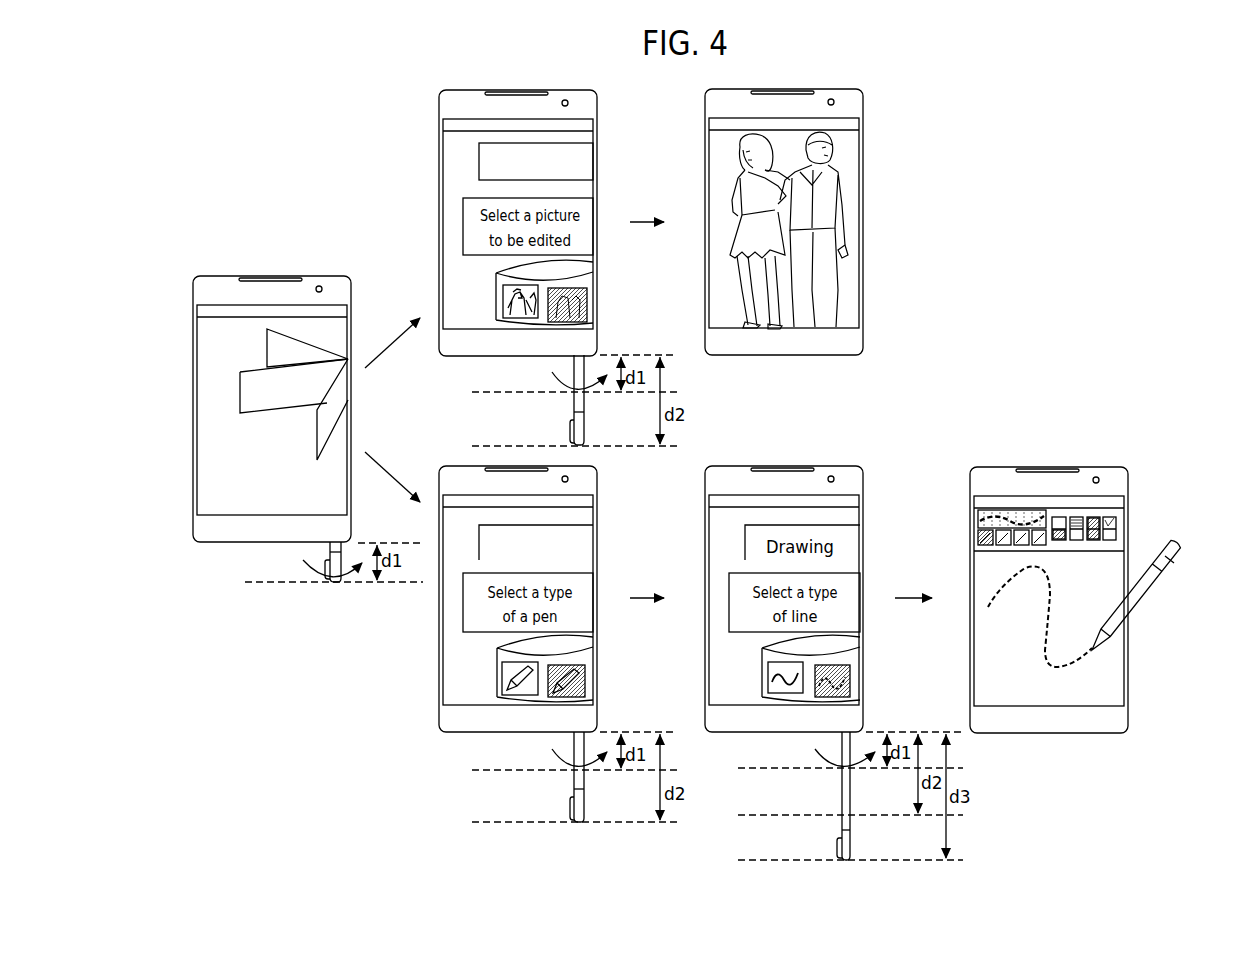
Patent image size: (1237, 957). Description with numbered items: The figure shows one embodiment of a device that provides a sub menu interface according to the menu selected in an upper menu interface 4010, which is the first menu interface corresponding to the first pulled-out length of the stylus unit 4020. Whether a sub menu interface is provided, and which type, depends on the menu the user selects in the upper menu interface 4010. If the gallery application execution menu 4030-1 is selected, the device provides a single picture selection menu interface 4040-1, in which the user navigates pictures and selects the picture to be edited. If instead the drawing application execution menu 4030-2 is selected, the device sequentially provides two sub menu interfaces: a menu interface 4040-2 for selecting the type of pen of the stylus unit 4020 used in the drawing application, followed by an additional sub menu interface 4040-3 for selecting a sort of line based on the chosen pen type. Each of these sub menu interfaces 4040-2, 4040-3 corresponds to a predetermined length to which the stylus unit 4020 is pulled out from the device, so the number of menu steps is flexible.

The upper menu interface 4010 is at (345, 387).
The stylus unit 4020 is at (333, 582).
The gallery application execution menu 4030-1 is at (592, 162).
The picture selection menu interface 4040-1 is at (590, 303).
The drawing application execution menu 4030-2 is at (590, 541).
The pen type selection sub menu interface 4040-2 is at (590, 680).
The line sort selection sub menu interface 4040-3 is at (855, 682).